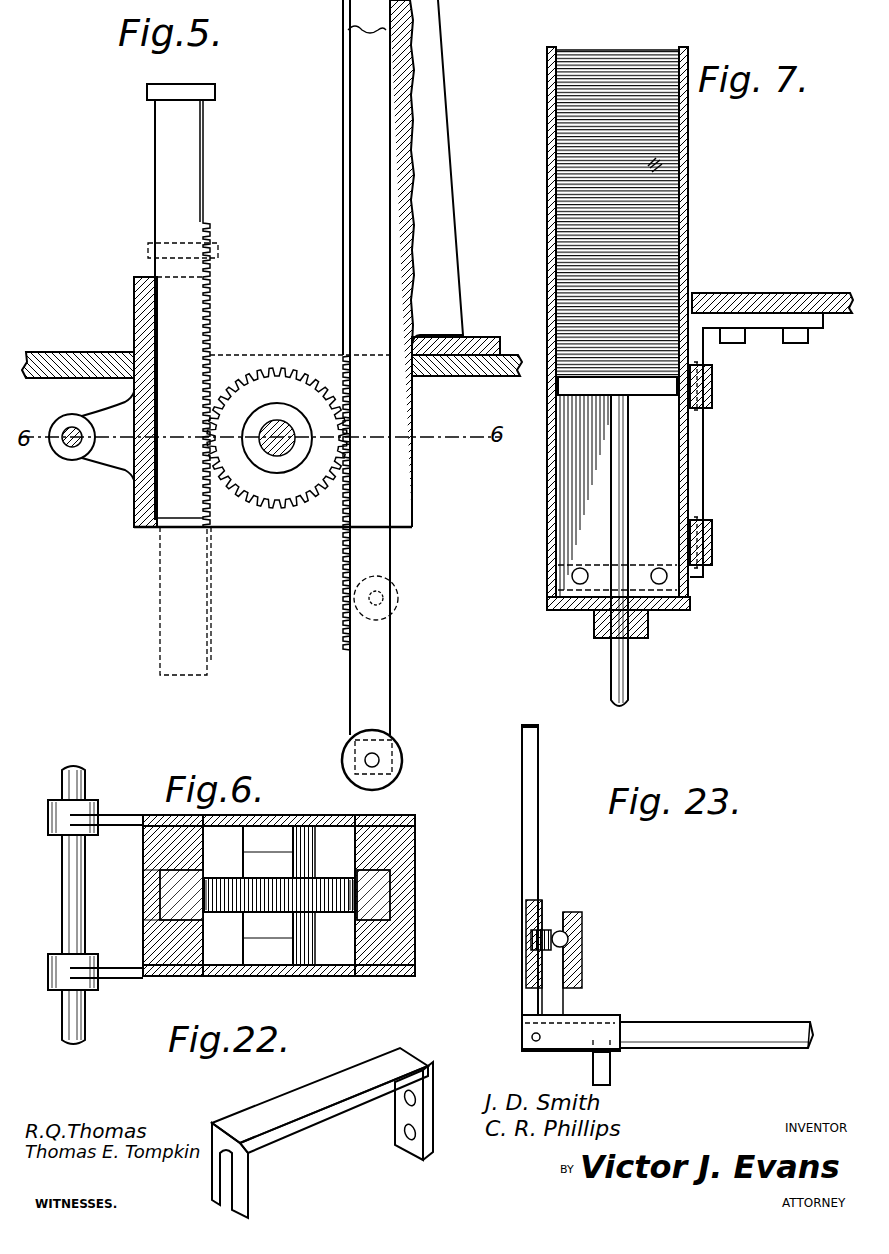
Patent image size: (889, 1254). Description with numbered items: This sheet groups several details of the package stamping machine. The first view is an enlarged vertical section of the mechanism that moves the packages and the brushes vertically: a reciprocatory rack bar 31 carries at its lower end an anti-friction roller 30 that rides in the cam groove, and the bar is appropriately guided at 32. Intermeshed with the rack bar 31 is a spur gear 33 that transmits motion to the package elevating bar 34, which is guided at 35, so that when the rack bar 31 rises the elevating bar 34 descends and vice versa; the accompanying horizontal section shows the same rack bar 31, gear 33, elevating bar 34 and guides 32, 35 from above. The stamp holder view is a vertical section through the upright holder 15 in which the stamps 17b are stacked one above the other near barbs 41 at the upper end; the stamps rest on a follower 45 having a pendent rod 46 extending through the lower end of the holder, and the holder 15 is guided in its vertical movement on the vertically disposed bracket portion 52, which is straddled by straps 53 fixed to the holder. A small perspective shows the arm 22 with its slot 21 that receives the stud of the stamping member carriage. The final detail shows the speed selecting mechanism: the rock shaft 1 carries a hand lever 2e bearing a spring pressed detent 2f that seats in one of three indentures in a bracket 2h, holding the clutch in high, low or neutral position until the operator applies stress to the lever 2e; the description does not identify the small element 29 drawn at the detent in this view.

In FIG. 23, the rock shaft 1 is at (677, 1023).
In FIG. 23, the hand lever 2e is at (535, 783).
In FIG. 23, the spring pressed detent 2f is at (560, 932).
In FIG. 23, the bracket 2h is at (583, 985).
In FIG. 7, the stamp holder 15 is at (547, 183).
In FIG. 7, the stamp 17b is at (662, 165).
In FIG. 22, the slot 21 is at (232, 1184).
In FIG. 22, the arm 22 is at (360, 1095).
In FIG. 23, the ball detent 29 is at (568, 926).
In FIG. 5, the anti-friction roller 30 is at (400, 757).
In FIG. 5, the rack bar 31 is at (380, 545).
In FIG. 6, the rack bar 31 is at (375, 895).
In FIG. 5, the guide 32 is at (345, 25).
In FIG. 6, the guide 32 is at (375, 840).
In FIG. 5, the spur gear 33 is at (268, 374).
In FIG. 6, the spur gear 33 is at (335, 905).
In FIG. 5, the package elevating bar 34 is at (188, 212).
In FIG. 6, the package elevating bar 34 is at (172, 888).
In FIG. 5, the guide 35 is at (150, 505).
In FIG. 6, the guide 35 is at (178, 925).
In FIG. 7, the barbs 41 is at (655, 50).
In FIG. 7, the follower 45 is at (580, 384).
In FIG. 7, the pendent rod 46 is at (630, 672).
In FIG. 7, the bracket portion 52 is at (703, 477).
In FIG. 7, the straps 53 is at (713, 398).